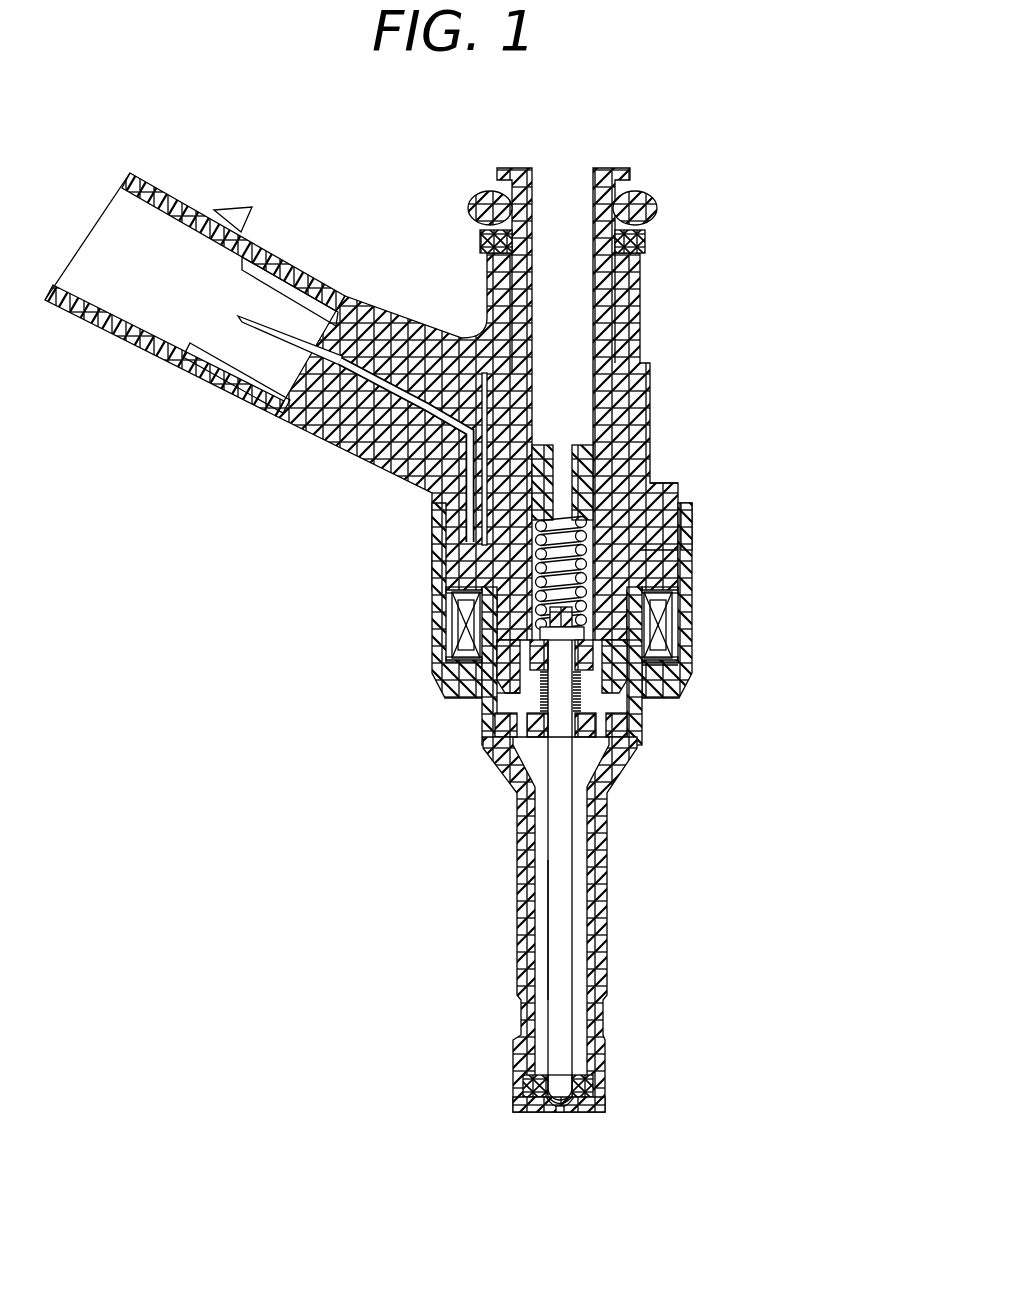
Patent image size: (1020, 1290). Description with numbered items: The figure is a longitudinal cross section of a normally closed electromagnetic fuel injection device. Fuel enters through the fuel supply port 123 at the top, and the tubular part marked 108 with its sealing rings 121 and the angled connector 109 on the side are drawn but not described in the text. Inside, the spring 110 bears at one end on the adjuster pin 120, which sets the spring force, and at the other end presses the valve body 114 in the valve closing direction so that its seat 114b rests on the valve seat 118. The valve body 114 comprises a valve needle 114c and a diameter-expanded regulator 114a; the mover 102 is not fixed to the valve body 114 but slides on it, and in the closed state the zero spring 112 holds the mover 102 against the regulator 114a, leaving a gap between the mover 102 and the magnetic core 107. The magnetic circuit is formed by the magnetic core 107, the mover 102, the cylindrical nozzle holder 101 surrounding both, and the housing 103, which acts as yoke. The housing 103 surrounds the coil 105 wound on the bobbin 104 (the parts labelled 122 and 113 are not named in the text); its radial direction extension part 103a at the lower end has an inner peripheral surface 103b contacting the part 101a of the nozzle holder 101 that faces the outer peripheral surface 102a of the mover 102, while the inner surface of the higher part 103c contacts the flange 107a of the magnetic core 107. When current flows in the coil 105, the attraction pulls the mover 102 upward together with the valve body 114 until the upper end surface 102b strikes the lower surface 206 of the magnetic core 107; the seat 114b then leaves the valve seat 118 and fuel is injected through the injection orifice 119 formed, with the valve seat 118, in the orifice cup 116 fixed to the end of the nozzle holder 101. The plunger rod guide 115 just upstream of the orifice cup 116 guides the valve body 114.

The nozzle holder 101 is at (604, 862).
The part of the nozzle holder 101a is at (645, 665).
The mover 102 is at (604, 662).
The outer peripheral surface of the mover 102a is at (500, 653).
The upper end surface of the mover 102b is at (638, 636).
The housing 103 is at (685, 680).
The radial direction extension part 103a is at (650, 700).
The inner peripheral surface 103b is at (487, 677).
The part of the housing 103c is at (692, 532).
The bobbin 104 is at (655, 661).
The coil 105 is at (660, 615).
The magnetic core 107 is at (625, 502).
The flange of the magnetic core 107a is at (660, 560).
The fuel pipe 108 is at (632, 300).
The connector 109 is at (430, 405).
The spring 110 is at (543, 565).
The zero spring 112 is at (543, 693).
The intermediate member 113 is at (487, 753).
The valve body 114 is at (557, 793).
The regulator 114a is at (552, 632).
The seat 114b is at (595, 1083).
The valve needle 114c is at (572, 925).
The plunger rod guide 115 is at (522, 1085).
The orifice cup 116 is at (522, 1100).
The valve seat 118 is at (582, 1108).
The injection orifice 119 is at (553, 1110).
The adjuster pin 120 is at (585, 470).
The O-ring 121 is at (650, 210).
The bobbin upper flange 122 is at (655, 592).
The fuel supply port 123 is at (560, 168).
The lower surface of the magnetic core 206 is at (612, 700).